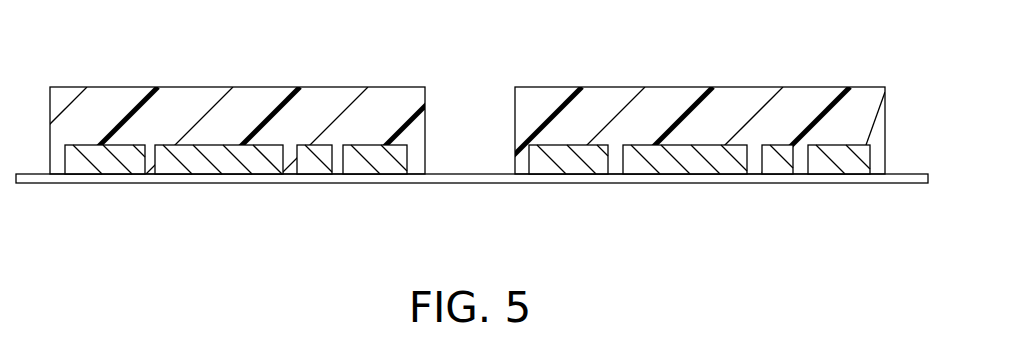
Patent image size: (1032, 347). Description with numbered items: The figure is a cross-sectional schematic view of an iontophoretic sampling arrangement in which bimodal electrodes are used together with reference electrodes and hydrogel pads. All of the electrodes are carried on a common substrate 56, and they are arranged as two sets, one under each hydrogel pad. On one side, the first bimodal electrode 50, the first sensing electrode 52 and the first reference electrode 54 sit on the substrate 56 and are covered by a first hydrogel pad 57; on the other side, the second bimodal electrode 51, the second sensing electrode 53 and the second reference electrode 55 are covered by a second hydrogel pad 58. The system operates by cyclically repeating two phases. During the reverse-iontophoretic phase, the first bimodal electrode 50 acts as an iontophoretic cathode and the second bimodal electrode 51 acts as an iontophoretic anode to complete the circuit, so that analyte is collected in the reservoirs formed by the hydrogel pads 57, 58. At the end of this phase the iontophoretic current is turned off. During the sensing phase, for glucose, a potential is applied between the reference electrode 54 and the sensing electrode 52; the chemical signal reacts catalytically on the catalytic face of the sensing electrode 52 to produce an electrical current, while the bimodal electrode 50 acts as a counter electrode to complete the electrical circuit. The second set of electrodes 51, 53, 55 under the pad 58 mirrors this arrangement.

The bimodal electrode 50 is at (95, 160).
The bimodal electrode 51 is at (571, 160).
The sensing electrode 52 is at (213, 158).
The sensing electrode 53 is at (675, 160).
The reference electrode 54 is at (313, 162).
The reference electrode 55 is at (777, 160).
The substrate 56 is at (462, 173).
The hydrogel pad 57 is at (207, 100).
The hydrogel pad 58 is at (706, 105).